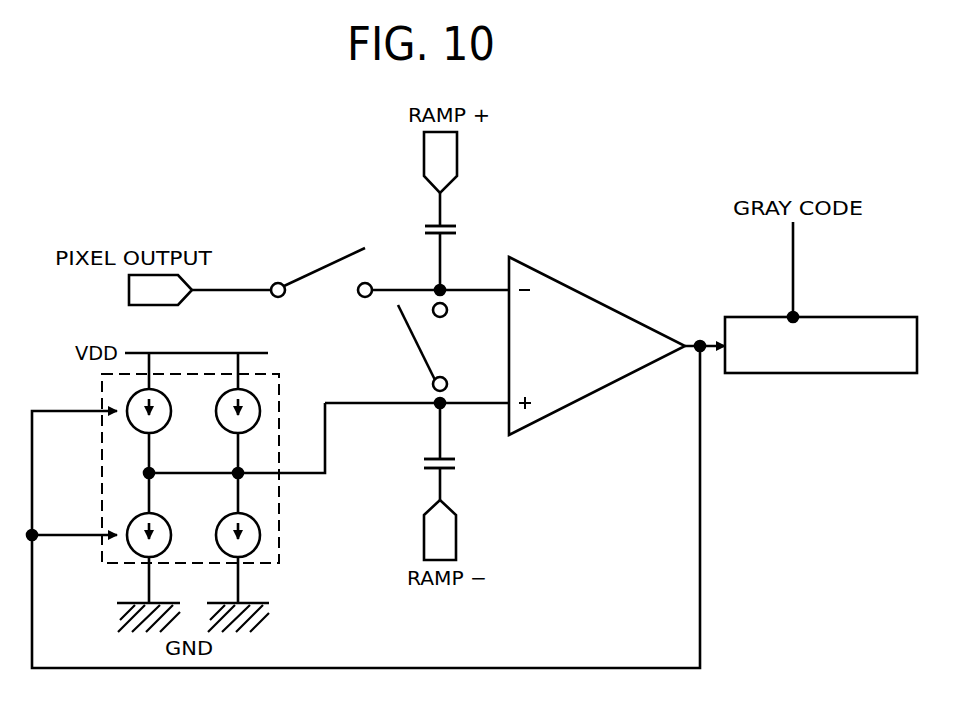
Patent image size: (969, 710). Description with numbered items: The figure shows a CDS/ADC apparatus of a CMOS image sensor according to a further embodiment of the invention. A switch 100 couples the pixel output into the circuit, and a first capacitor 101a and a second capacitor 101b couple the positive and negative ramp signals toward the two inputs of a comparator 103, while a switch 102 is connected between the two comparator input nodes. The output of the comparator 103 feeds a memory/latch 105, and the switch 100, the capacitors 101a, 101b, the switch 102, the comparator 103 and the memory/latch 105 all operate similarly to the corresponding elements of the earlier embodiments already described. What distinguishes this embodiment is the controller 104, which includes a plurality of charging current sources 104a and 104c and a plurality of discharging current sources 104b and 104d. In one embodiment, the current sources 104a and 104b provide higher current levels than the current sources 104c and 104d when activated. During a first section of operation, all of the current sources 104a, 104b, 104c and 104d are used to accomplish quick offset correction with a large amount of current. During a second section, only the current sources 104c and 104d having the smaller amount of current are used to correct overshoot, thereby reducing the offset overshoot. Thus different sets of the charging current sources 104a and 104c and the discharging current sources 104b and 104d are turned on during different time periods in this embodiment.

The switch 100 is at (318, 263).
The first capacitor 101a is at (443, 226).
The second capacitor 101b is at (443, 468).
The switch 102 is at (413, 350).
The comparator 103 is at (598, 298).
The controller 104 is at (100, 392).
The charging current source 104a is at (133, 430).
The discharging current source 104b is at (133, 554).
The charging current source 104c is at (258, 394).
The discharging current source 104d is at (252, 554).
The memory/latch 105 is at (835, 317).